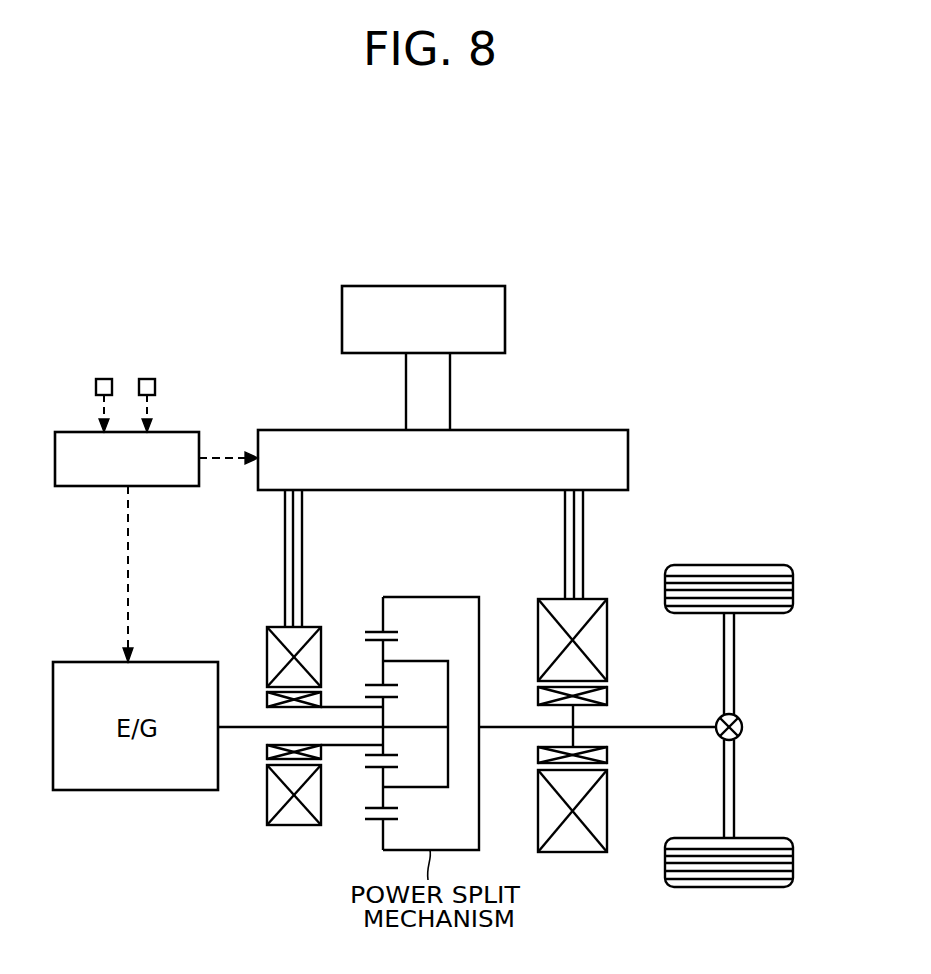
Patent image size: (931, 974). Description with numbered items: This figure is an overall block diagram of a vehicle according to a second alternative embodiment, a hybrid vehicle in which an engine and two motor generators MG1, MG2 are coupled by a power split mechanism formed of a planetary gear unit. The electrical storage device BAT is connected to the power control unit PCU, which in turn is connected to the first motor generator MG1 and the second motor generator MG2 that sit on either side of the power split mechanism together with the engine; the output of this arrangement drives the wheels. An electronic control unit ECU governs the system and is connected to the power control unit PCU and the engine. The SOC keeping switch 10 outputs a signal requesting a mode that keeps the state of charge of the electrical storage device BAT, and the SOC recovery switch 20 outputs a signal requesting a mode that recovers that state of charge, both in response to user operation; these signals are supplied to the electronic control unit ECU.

The SOC keeping switch 10 is at (104, 379).
The SOC recovery switch 20 is at (147, 379).
The electrical storage device BAT is at (423, 319).
The power control unit PCU is at (443, 460).
The electronic control unit ECU is at (127, 459).
The motor generator MG1 is at (294, 743).
The motor generator MG2 is at (572, 741).